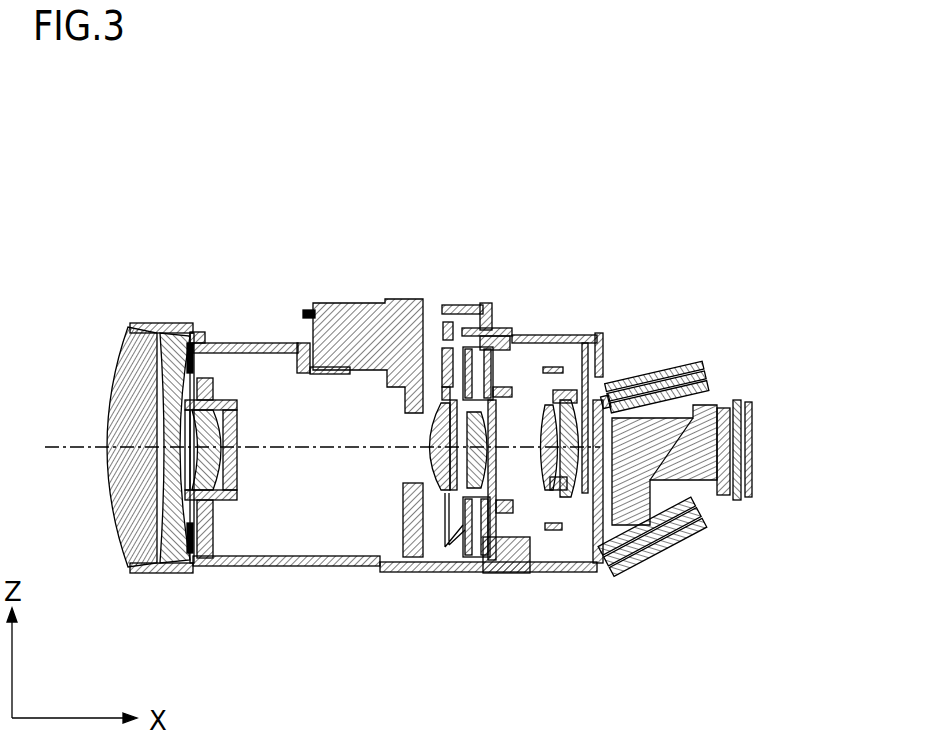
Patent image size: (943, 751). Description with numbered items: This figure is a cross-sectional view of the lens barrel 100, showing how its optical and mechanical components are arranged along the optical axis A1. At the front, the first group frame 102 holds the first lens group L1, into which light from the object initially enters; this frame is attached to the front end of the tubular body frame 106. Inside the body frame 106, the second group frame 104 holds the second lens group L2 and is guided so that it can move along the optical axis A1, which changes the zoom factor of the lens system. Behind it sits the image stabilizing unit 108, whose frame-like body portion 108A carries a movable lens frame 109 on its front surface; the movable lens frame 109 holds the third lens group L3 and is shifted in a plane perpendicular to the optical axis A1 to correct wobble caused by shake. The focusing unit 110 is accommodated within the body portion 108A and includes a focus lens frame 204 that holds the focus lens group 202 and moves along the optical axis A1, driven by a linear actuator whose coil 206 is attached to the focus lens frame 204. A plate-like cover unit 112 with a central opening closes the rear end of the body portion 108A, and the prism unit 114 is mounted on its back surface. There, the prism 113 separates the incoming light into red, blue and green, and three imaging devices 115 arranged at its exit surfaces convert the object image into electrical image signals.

The lens barrel 100 is at (352, 150).
The first group frame 102 is at (172, 322).
The second group frame 104 is at (207, 383).
The body frame 106 is at (274, 343).
The image stabilizing unit 108 is at (452, 290).
The body portion 108A is at (470, 305).
The movable lens frame 109 is at (447, 545).
The focusing unit 110 is at (554, 356).
The cover unit 112 is at (604, 347).
The prism 113 is at (687, 480).
The prism unit 114 is at (654, 348).
The imaging device 115 is at (675, 362).
The focus lens group 202 is at (543, 478).
The focus lens frame 204 is at (582, 492).
The coil 206 is at (554, 535).
The first lens group L1 is at (113, 525).
The second lens group L2 is at (238, 436).
The third lens group L3 is at (427, 455).
The optical axis A1 is at (52, 446).